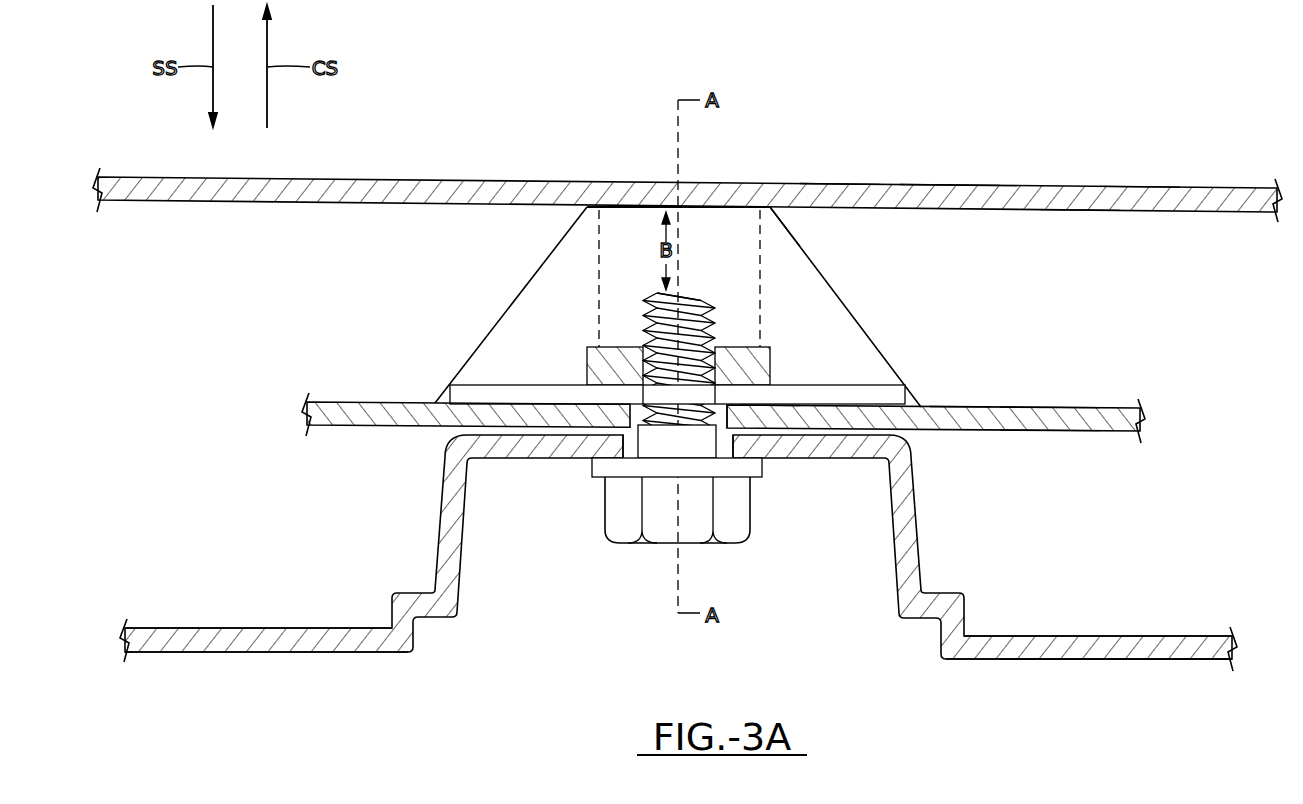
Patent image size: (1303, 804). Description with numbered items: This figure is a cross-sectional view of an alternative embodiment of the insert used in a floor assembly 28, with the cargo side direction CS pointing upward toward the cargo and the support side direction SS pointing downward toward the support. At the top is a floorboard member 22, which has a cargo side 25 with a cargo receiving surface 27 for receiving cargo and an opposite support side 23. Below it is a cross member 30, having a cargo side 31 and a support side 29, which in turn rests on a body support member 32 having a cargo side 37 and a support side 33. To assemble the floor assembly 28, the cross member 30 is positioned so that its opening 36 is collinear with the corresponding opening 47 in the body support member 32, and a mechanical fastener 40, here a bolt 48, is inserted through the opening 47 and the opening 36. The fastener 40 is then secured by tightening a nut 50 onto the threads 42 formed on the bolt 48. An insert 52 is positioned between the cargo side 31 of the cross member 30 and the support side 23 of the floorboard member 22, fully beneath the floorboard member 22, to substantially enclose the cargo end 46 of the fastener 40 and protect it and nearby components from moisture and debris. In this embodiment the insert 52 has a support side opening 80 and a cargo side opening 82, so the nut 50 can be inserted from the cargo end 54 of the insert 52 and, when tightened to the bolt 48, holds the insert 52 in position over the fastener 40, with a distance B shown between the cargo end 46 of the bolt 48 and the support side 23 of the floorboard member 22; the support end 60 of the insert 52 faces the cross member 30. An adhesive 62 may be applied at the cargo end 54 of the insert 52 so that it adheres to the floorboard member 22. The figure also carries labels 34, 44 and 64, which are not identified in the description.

The floorboard member 22 is at (432, 180).
The support side 23 is at (1082, 224).
The cargo side 25 is at (1142, 163).
The cargo receiving surface 27 is at (945, 185).
The floor assembly 28 is at (845, 156).
The support side 29 is at (1064, 448).
The cross member 30 is at (1122, 407).
The cargo side 31 is at (1062, 397).
The body support member 32 is at (915, 487).
The support side 33 is at (992, 636).
The nut 34 is at (630, 405).
The opening 36 is at (738, 432).
The cargo side 37 is at (1163, 660).
The mechanical fastener 40 is at (698, 438).
The threads 42 is at (710, 296).
The washer 44 is at (732, 528).
The cargo end 46 is at (693, 292).
The opening 47 is at (780, 405).
The bolt 48 is at (733, 530).
The nut 50 is at (598, 347).
The insert 52 is at (478, 362).
The cargo end 54 is at (770, 210).
The support end 60 is at (962, 407).
The adhesive 62 is at (585, 207).
The bracket aperture 64 is at (607, 452).
The support side opening 80 is at (713, 407).
The cargo side opening 82 is at (623, 230).